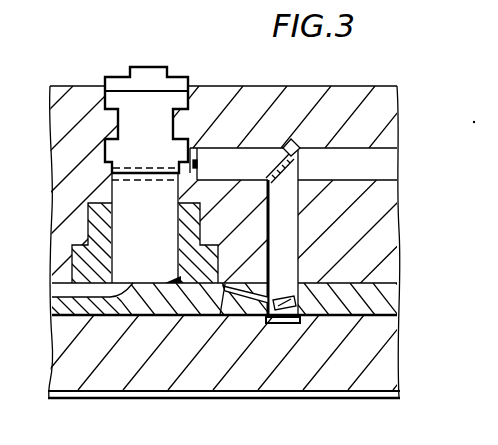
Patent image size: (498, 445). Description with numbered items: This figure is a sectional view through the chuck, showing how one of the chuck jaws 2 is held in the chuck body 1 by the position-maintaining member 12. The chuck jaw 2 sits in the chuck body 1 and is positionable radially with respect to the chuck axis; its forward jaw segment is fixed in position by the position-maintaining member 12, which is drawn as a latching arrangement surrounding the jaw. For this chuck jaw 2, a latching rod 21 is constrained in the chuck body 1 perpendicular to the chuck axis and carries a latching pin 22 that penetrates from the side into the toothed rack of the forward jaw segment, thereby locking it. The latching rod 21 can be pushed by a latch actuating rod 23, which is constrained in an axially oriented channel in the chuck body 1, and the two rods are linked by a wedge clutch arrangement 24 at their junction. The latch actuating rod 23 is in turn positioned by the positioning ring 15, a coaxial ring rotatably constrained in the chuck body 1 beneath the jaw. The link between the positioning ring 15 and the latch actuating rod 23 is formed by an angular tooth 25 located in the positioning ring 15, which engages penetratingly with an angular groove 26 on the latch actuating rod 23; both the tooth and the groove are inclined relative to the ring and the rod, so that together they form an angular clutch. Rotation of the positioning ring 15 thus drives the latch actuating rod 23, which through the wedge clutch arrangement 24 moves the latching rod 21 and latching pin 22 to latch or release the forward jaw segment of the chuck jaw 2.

The chuck body 1 is at (58, 125).
The chuck jaw 2 is at (138, 56).
The position-maintaining member 12 is at (228, 129).
The positioning ring 15 is at (340, 316).
The latching rod 21 is at (245, 163).
The latching pin 22 is at (197, 164).
The latch actuating rod 23 is at (300, 222).
The wedge clutch arrangement 24 is at (306, 167).
The angular tooth 25 is at (302, 283).
The angular groove 26 is at (232, 316).